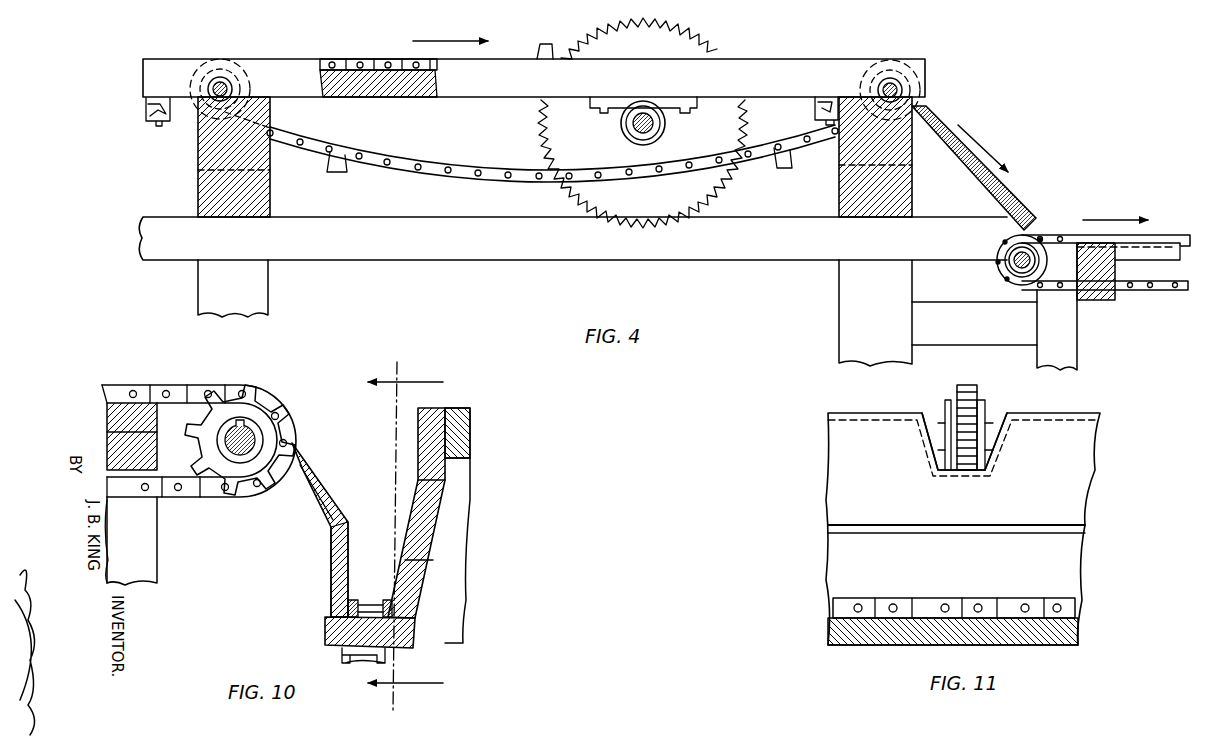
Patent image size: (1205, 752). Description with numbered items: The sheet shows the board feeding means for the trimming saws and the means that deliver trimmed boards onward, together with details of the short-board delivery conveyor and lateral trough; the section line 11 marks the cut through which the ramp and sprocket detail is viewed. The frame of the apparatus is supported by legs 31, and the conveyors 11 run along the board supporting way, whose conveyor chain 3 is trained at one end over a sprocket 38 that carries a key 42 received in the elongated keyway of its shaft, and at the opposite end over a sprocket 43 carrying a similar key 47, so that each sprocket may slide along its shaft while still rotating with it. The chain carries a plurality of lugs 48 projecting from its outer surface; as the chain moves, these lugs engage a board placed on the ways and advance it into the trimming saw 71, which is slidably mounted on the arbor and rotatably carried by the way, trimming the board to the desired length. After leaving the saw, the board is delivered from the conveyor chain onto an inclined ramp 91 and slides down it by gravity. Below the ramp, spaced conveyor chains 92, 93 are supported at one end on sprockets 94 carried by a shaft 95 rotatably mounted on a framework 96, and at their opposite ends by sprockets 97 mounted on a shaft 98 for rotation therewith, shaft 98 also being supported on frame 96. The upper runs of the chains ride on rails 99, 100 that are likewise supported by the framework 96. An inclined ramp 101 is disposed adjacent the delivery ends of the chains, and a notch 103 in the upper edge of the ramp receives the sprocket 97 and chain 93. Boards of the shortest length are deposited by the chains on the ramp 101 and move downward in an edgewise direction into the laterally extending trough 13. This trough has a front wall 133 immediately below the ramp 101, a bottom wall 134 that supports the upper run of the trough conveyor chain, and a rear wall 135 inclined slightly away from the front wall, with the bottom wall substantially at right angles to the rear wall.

In FIG. 4, the endless conveyor chain 3 is at (465, 176).
In FIG. 10, the conveyors 11 is at (405, 534).
In FIG. 10, the laterally extending trough 13 is at (320, 582).
In FIG. 4, the legs 31 is at (266, 288).
In FIG. 4, the sprocket 38 is at (235, 66).
In FIG. 4, the key 42 is at (240, 84).
In FIG. 4, the sprocket 43 is at (920, 81).
In FIG. 4, the key 47 is at (898, 66).
In FIG. 4, the lugs 48 is at (345, 166).
In FIG. 4, the trimming saw 71 is at (718, 38).
In FIG. 4, the inclined ramp 91 is at (977, 183).
In FIG. 4, the conveyor chain 92 is at (1158, 290).
In FIG. 10, the conveyor chain 93 is at (172, 384).
In FIG. 11, the conveyor chain 93 is at (952, 398).
In FIG. 4, the sprockets 94 is at (1036, 258).
In FIG. 4, the shaft 95 is at (1003, 279).
In FIG. 4, the framework 96 is at (1080, 357).
In FIG. 10, the framework 96 is at (159, 564).
In FIG. 10, the sprockets 97 is at (193, 452).
In FIG. 11, the sprockets 97 is at (978, 400).
In FIG. 10, the shaft 98 is at (250, 425).
In FIG. 4, the rail 99 is at (1140, 262).
In FIG. 10, the rail 100 is at (112, 414).
In FIG. 10, the inclined ramp 101 is at (306, 504).
In FIG. 11, the inclined ramp 101 is at (1087, 454).
In FIG. 11, the notch 103 is at (928, 414).
In FIG. 10, the front wall 133 is at (330, 562).
In FIG. 10, the bottom wall 134 is at (325, 630).
In FIG. 10, the rear wall 135 is at (430, 565).